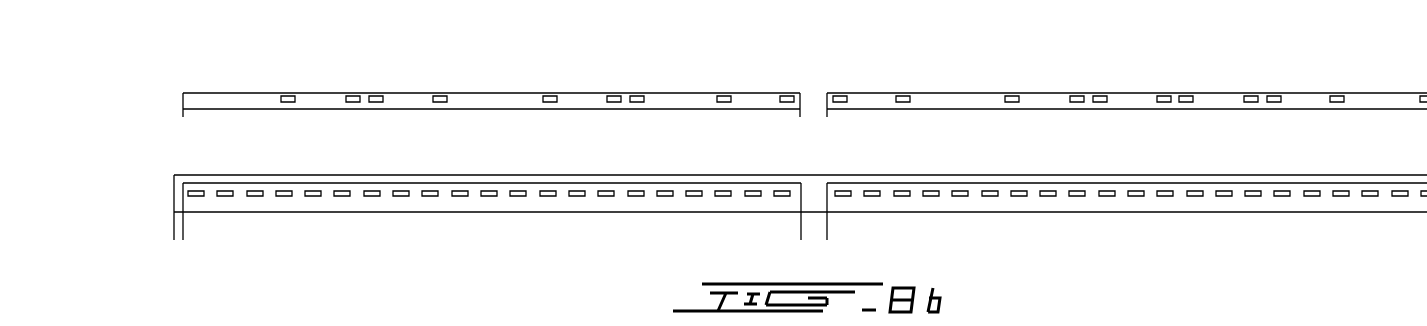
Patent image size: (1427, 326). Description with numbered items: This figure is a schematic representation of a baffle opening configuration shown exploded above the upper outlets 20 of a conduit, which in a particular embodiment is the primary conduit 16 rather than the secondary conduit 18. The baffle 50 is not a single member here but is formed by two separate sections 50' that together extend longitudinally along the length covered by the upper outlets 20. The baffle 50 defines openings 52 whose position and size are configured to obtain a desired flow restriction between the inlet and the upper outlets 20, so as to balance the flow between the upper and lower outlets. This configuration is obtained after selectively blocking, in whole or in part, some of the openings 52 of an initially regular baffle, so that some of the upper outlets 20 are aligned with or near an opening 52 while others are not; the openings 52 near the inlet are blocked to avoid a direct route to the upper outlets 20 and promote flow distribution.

The baffle 50 is at (448, 76).
The section of the baffle 50' is at (1105, 73).
The opening 52 is at (377, 95).
The primary conduit 16 is at (755, 230).
The secondary conduit 18 is at (755, 230).
The upper outlet 20 is at (277, 197).